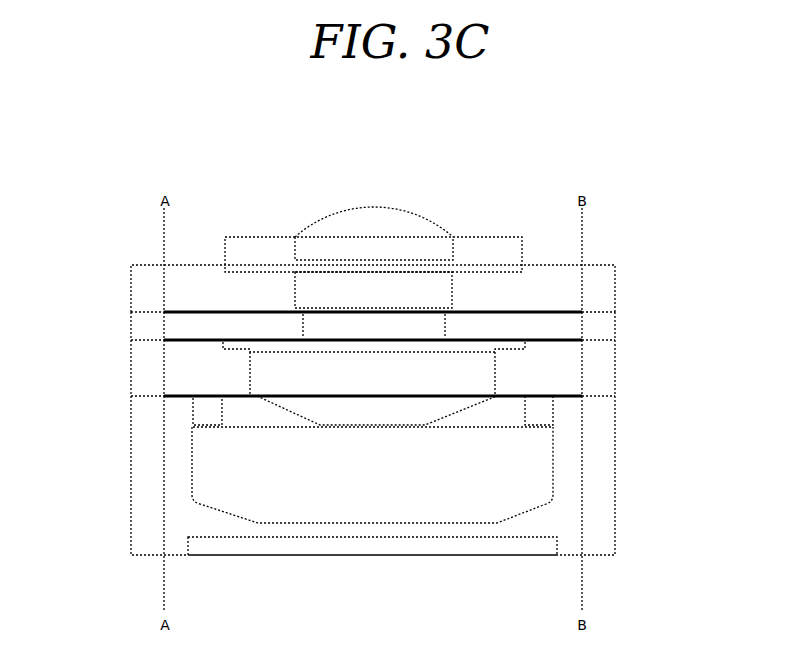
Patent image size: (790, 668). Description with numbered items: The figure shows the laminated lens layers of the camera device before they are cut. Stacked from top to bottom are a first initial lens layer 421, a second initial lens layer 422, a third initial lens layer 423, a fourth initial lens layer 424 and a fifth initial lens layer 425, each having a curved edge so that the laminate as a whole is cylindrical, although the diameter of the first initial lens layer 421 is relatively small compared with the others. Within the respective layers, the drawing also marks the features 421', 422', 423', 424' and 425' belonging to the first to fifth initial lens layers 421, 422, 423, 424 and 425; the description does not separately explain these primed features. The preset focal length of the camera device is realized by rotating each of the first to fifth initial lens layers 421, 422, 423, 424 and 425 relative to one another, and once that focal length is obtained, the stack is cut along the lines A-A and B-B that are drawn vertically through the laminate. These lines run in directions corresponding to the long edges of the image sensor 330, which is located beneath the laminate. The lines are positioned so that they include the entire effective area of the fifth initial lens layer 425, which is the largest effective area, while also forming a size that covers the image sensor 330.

The first initial lens layer 421 is at (373, 203).
The first pattern 421' is at (374, 196).
The second initial lens layer 422 is at (401, 288).
The second pattern 422' is at (261, 290).
The third initial lens layer 423 is at (401, 321).
The third pattern 423' is at (258, 326).
The fourth initial lens layer 424 is at (401, 368).
The fourth pattern 424' is at (298, 369).
The fifth initial lens layer 425 is at (401, 475).
The fifth pattern 425' is at (312, 459).
The image sensor 330 is at (502, 555).